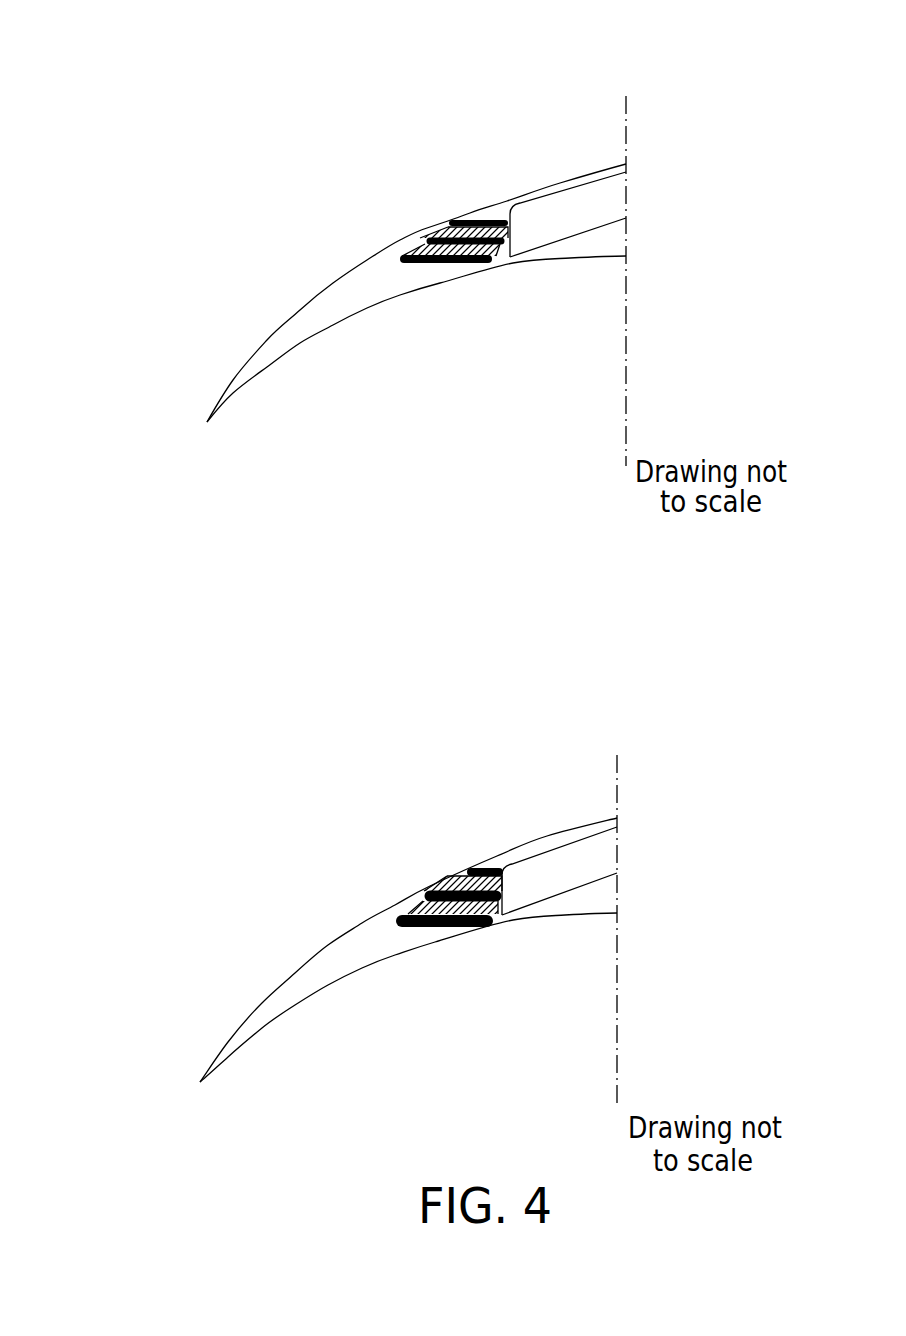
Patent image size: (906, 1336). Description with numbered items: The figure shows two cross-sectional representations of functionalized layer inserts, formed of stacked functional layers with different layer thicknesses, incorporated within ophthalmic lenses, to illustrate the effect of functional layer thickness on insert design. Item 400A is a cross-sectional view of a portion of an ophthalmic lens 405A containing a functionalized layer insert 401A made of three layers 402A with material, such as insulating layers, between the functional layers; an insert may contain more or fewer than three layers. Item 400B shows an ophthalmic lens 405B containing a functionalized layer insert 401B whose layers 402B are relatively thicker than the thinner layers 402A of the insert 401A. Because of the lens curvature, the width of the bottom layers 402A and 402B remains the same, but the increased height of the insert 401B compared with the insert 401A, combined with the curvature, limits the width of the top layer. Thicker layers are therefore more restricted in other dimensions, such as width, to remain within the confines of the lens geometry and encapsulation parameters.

The cross-sectional view of a portion of an ophthalmic lens 400A is at (288, 268).
The functionalized layer insert 401A is at (473, 207).
The layers 402A is at (448, 217).
The ophthalmic lens 405A is at (579, 165).
The cross-sectional view of a portion of an ophthalmic lens 400B is at (281, 915).
The functionalized layer insert 401B is at (487, 861).
The layers 402B is at (466, 861).
The ophthalmic lens 405B is at (562, 822).